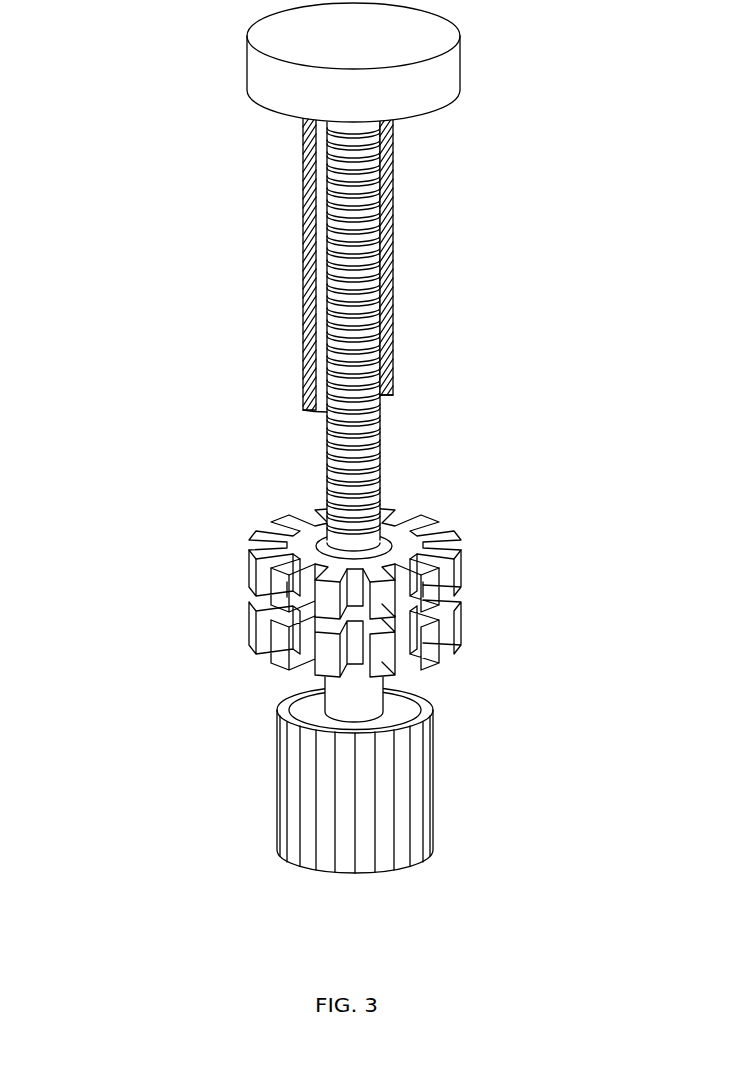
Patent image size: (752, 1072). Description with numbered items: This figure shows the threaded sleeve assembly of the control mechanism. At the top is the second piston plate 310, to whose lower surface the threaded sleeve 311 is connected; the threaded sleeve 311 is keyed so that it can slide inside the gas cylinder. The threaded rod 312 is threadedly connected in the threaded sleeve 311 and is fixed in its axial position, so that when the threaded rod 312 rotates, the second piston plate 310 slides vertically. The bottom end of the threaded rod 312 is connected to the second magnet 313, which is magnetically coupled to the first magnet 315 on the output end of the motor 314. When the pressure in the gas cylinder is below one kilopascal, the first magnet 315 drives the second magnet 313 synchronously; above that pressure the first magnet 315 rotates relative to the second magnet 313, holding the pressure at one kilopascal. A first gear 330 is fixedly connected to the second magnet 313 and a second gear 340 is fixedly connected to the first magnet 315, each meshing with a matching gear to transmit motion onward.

The second piston plate 310 is at (332, 53).
The threaded sleeve 311 is at (308, 192).
The threaded rod 312 is at (385, 402).
The second magnet 313 is at (305, 541).
The motor 314 is at (327, 748).
The first magnet 315 is at (347, 617).
The first gear 330 is at (440, 540).
The second gear 340 is at (440, 640).